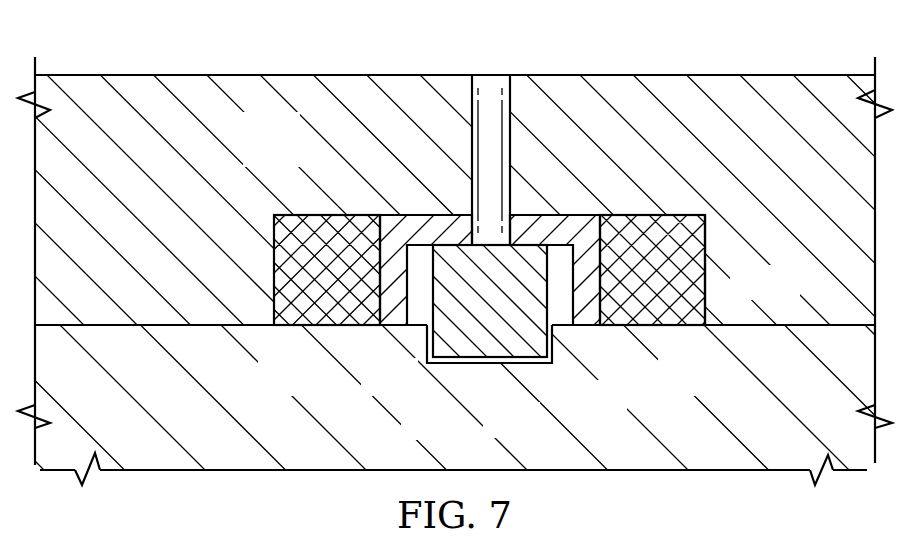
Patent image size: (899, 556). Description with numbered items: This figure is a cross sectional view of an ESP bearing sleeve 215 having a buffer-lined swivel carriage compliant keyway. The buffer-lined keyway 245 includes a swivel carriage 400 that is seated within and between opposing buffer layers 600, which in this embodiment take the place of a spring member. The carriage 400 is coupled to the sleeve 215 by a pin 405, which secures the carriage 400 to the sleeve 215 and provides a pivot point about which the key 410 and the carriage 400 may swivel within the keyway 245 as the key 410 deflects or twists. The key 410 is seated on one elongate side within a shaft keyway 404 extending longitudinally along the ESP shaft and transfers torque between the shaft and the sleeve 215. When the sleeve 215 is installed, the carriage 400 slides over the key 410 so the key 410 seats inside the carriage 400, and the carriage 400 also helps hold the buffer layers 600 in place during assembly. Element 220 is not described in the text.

The sleeve 215 is at (295, 152).
The substrate 220 is at (622, 411).
The buffer-lined keyway 245 is at (707, 293).
The swivel carriage 400 is at (397, 318).
The shaft keyway 404 is at (450, 362).
The pin 405 is at (492, 82).
The key 410 is at (523, 347).
The buffer layer 600 is at (297, 318).